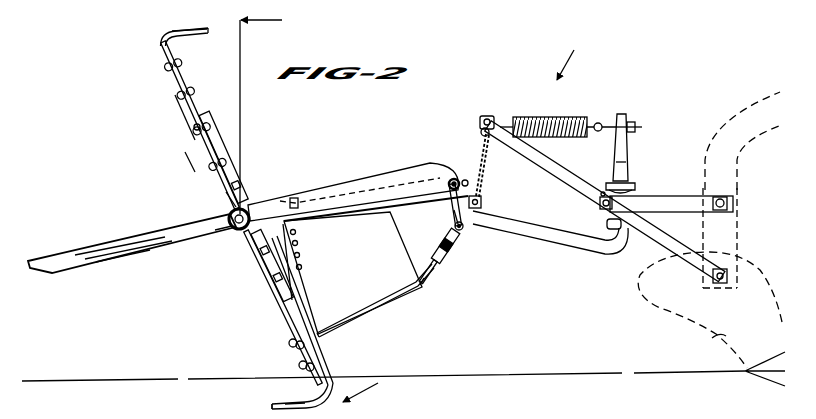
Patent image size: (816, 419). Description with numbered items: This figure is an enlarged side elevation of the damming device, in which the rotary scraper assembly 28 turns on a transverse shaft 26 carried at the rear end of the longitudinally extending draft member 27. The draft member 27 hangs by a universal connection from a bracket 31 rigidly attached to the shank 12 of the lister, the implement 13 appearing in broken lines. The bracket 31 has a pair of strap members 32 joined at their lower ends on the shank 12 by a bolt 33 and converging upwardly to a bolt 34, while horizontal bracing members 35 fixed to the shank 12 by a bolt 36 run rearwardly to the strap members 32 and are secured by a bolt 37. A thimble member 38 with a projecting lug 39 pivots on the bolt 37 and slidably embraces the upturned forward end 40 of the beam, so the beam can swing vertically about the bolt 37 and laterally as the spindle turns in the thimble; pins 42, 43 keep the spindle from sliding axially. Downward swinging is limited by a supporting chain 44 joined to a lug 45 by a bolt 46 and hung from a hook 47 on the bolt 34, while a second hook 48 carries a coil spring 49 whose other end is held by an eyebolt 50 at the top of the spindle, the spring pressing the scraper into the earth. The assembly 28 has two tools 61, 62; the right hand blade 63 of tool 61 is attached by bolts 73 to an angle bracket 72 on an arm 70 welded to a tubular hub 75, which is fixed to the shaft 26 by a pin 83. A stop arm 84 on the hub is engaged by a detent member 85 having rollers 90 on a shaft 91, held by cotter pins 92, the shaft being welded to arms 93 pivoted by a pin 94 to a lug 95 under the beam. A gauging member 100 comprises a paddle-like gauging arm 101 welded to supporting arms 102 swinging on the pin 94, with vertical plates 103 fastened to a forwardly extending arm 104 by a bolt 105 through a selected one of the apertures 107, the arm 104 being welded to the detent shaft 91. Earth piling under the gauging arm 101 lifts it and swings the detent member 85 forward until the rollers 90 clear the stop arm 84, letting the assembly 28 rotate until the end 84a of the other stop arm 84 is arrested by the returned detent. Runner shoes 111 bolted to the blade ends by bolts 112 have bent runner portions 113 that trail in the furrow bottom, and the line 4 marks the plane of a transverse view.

The section line 4- 4 is at (314, 206).
The shank 12 is at (727, 223).
The implement 13 is at (708, 340).
The transverse shaft 26 is at (245, 212).
The draft member 27 is at (548, 238).
The rotary scraper assembly 28 is at (182, 165).
The bracket 31 is at (648, 238).
The strap members 32 is at (580, 172).
The bolt 33 is at (718, 284).
The bolt 34 is at (488, 118).
The bracing members 35 is at (668, 209).
The bolt 36 is at (723, 196).
The bolt 37 is at (601, 208).
The thimble member 38 is at (635, 188).
The projecting lug 39 is at (603, 191).
The upturned forward end 40 is at (623, 158).
The pin 42 is at (626, 170).
The pin 43 is at (608, 225).
The supporting chain 44 is at (486, 162).
The lug 45 is at (481, 203).
The bolt 46 is at (480, 198).
The hook 47 is at (482, 131).
The second hook 48 is at (507, 124).
The coil spring 49 is at (568, 118).
The eyebolt 50 is at (633, 120).
The tool 61 is at (158, 83).
The tool 62 is at (272, 323).
The right hand blade 63 is at (182, 108).
The arms 70 is at (228, 202).
The angle brackets 72 is at (210, 140).
The bolts 73 is at (199, 126).
The tubular hub 75 is at (238, 234).
The pin 83 is at (228, 230).
The stop arms 84 is at (400, 169).
The end of stop arm 84a is at (38, 262).
The detent member 85 is at (467, 179).
The rollers 90 is at (449, 181).
The shaft 91 is at (453, 178).
The cotter pins 92 is at (452, 194).
The arms 93 is at (449, 216).
The pin 94 is at (461, 231).
The lug 95 is at (463, 228).
The gauging member 100 is at (386, 314).
The gauging arm 101 is at (428, 278).
The supporting arms 102 is at (446, 258).
The plates 103 is at (352, 273).
The forwardly extending arm 104 is at (390, 210).
The bolt 105 is at (296, 198).
The apertures 107 is at (300, 244).
The runner shoes 111 is at (180, 30).
The bolts 112 is at (181, 88).
The runner portion 113 is at (297, 405).